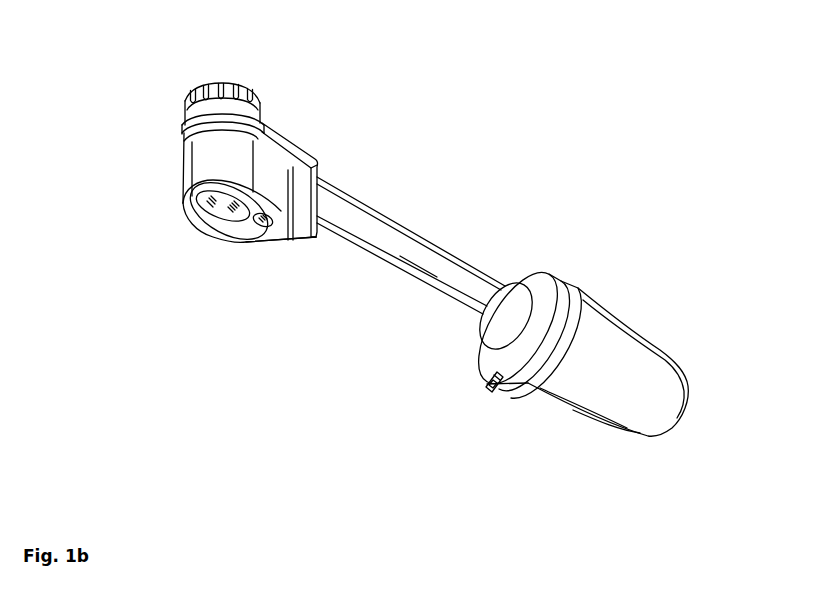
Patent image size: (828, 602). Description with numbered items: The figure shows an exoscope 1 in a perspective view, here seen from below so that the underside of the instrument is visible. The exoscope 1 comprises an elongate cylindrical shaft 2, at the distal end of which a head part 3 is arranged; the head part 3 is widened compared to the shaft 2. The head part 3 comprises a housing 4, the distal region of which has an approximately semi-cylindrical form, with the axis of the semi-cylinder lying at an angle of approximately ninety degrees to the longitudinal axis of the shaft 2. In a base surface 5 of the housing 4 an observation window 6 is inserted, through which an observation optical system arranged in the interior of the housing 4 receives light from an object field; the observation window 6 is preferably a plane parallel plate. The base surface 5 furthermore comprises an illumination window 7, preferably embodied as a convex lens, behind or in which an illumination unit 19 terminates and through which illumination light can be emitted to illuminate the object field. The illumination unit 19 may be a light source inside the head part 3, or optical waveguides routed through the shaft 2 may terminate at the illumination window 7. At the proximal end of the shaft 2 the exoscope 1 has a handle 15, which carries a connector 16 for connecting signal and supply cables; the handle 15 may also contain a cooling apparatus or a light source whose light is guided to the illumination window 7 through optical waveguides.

The exoscope 1 is at (436, 164).
The shaft 2 is at (423, 250).
The head part 3 is at (269, 84).
The housing 4 is at (273, 167).
The base surface 5 is at (243, 227).
The observation window 6 is at (218, 213).
The illumination window 7 is at (263, 226).
The handle 15 is at (617, 350).
The connector 16 is at (497, 389).
The illumination unit 19 is at (272, 232).